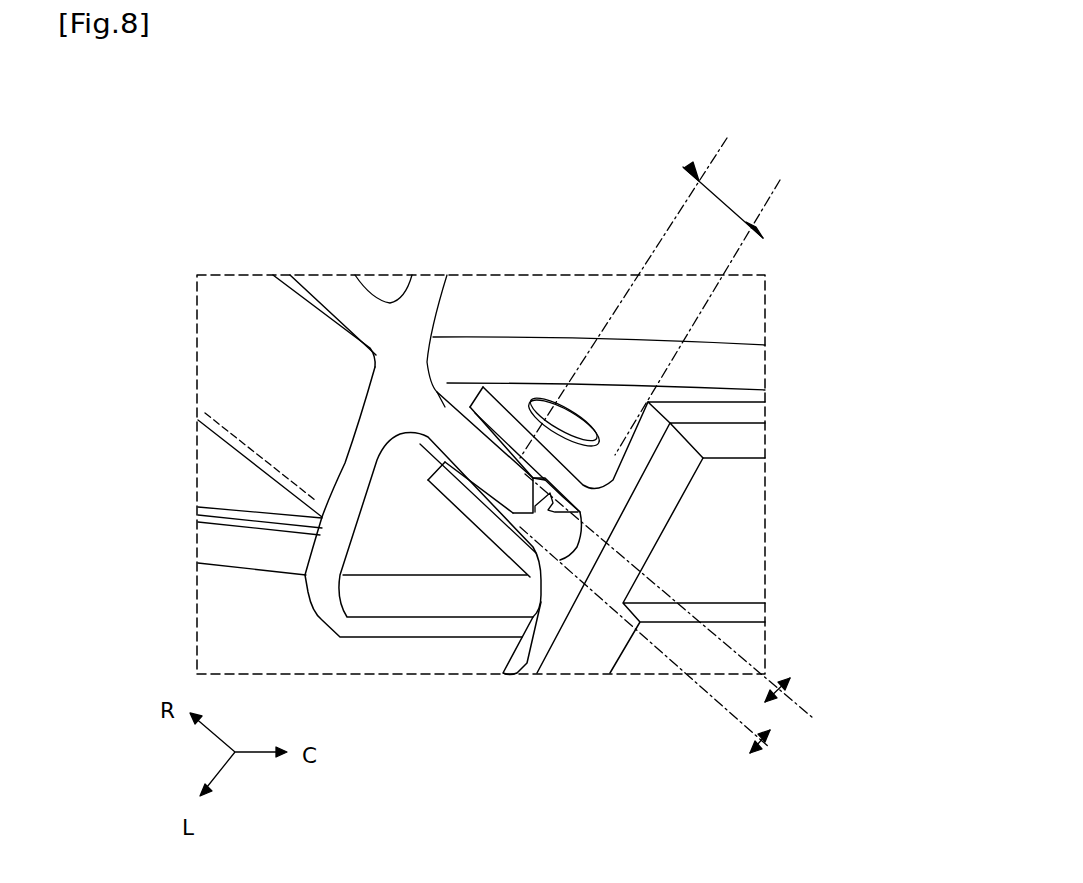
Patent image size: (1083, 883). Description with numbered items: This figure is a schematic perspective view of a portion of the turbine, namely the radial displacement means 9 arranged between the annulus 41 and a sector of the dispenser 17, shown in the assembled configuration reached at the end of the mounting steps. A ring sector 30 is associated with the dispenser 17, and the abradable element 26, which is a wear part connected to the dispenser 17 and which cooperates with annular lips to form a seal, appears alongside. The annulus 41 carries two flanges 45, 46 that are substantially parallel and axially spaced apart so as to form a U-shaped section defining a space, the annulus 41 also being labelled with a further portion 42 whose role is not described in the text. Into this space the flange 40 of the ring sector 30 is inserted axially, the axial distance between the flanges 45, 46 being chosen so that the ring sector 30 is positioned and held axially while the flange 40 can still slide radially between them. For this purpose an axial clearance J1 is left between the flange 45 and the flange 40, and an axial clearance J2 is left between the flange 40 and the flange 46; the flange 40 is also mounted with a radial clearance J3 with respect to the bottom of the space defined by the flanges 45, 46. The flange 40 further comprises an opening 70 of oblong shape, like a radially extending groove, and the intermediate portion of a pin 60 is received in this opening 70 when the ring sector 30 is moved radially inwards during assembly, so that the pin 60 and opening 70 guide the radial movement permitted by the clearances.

The vehicle body structure 9 is at (467, 219).
The ring sector 30 is at (481, 424).
The dispenser 17 is at (343, 275).
The flange 40 is at (445, 410).
The pin 60 is at (548, 403).
The abradable element 26 is at (743, 451).
The annulus 41 is at (439, 605).
The flange 45 is at (497, 440).
The flange 46 is at (520, 553).
The leg portion 42 is at (497, 662).
The opening 70 is at (551, 530).
The axial clearance J1 is at (750, 760).
The axial clearance J2 is at (788, 677).
The radial clearance J3 is at (770, 240).